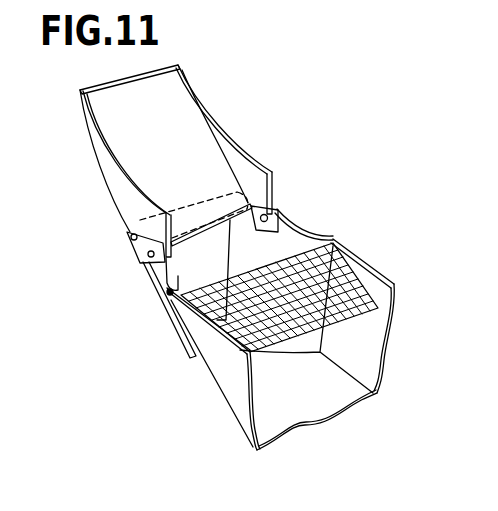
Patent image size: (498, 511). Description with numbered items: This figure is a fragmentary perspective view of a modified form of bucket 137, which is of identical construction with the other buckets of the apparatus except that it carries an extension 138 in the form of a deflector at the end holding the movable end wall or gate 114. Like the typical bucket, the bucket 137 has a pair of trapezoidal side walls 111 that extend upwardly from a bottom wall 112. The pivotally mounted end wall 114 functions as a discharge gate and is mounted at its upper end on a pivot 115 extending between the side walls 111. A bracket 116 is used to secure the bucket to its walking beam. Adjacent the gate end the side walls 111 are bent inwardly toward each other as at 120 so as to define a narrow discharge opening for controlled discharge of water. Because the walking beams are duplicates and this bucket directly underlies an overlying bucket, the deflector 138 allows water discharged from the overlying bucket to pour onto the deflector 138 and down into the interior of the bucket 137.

The side walls 111 is at (392, 285).
The bottom wall 112 is at (325, 405).
The pivotally mounted end wall 114 is at (147, 284).
The pivot 115 is at (132, 236).
The bracket 116 is at (163, 304).
The inwardly bent portions 120 is at (173, 325).
The modified bucket 137 is at (376, 248).
The extension 138 is at (221, 124).